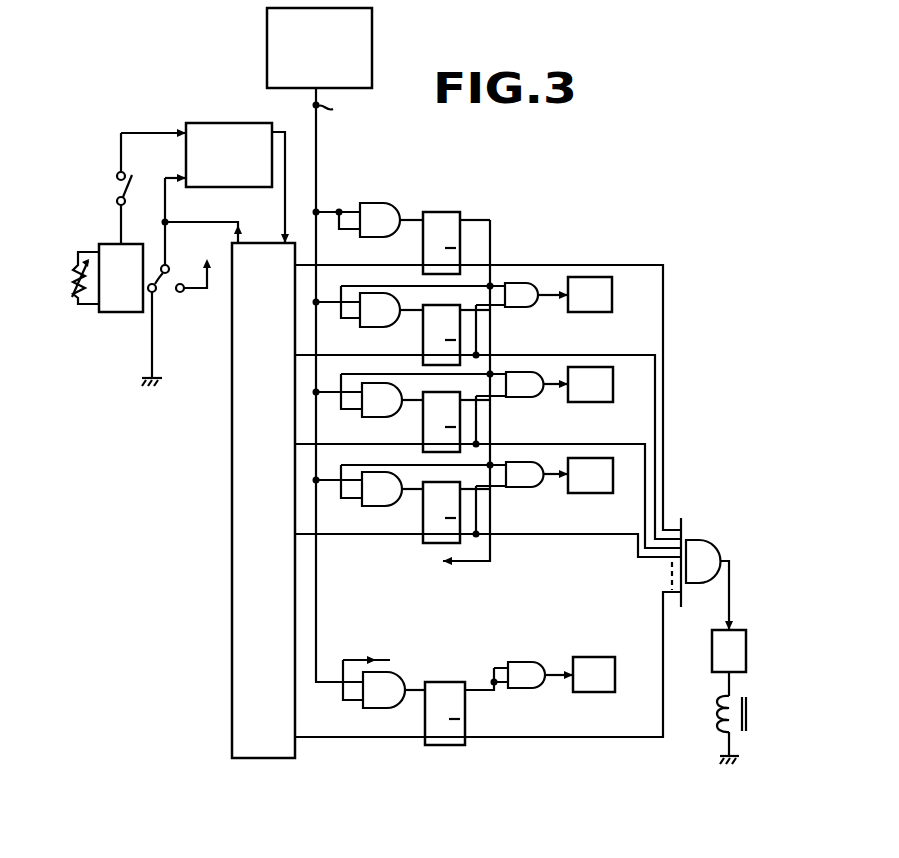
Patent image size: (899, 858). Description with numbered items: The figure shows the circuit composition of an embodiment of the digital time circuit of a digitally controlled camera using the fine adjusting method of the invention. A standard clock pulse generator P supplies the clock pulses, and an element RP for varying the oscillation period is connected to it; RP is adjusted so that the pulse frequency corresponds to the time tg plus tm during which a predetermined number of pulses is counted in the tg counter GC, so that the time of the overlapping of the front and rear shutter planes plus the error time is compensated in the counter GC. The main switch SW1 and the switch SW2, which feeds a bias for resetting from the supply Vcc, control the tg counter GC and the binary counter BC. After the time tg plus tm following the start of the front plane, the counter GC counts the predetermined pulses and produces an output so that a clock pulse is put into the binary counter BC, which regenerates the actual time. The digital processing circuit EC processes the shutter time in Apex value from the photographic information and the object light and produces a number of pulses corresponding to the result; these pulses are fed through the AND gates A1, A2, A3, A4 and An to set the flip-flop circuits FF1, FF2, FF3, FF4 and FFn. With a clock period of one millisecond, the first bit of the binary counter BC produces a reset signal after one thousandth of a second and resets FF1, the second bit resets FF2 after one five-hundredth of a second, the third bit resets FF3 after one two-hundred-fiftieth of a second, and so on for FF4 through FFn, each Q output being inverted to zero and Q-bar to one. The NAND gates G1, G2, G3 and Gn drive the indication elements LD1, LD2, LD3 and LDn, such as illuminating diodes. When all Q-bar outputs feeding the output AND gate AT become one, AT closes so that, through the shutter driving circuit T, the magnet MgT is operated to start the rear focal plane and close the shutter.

The digital processing circuit EC is at (319, 48).
The tg counter GC is at (229, 155).
The main switch SW1 is at (117, 189).
The reset bias switch SW2 is at (192, 280).
The standard clock pulse generator P is at (121, 278).
The oscillation period varying element RP is at (75, 278).
The supply voltage Vcc is at (205, 258).
The binary counter BC is at (264, 500).
The AND gate A1 is at (369, 220).
The AND gate A2 is at (369, 306).
The AND gate A3 is at (369, 395).
The AND gate A4 is at (369, 485).
The AND gate An is at (384, 682).
The flip-flop circuit FF1 is at (423, 247).
The flip-flop circuit FF2 is at (423, 335).
The flip-flop circuit FF3 is at (423, 423).
The flip-flop circuit FF4 is at (423, 513).
The flip-flop circuit FFn is at (448, 682).
The NAND gate G1 is at (519, 314).
The NAND gate G2 is at (519, 404).
The NAND gate G3 is at (519, 494).
The NAND gate Gn is at (521, 695).
The indication element LD1 is at (590, 294).
The indication element LD2 is at (590, 384).
The indication element LD3 is at (590, 475).
The indication element LDn is at (594, 674).
The output AND gate AT is at (707, 574).
The shutter driving circuit T is at (729, 651).
The magnet MgT is at (750, 718).